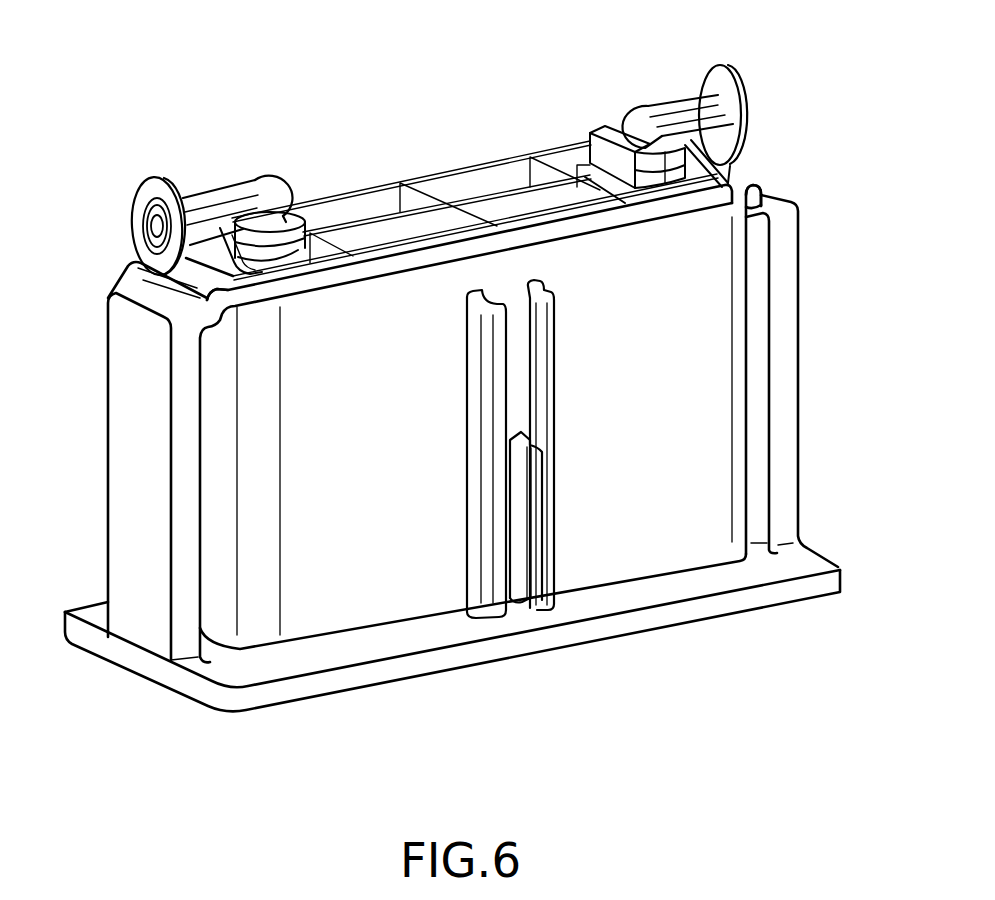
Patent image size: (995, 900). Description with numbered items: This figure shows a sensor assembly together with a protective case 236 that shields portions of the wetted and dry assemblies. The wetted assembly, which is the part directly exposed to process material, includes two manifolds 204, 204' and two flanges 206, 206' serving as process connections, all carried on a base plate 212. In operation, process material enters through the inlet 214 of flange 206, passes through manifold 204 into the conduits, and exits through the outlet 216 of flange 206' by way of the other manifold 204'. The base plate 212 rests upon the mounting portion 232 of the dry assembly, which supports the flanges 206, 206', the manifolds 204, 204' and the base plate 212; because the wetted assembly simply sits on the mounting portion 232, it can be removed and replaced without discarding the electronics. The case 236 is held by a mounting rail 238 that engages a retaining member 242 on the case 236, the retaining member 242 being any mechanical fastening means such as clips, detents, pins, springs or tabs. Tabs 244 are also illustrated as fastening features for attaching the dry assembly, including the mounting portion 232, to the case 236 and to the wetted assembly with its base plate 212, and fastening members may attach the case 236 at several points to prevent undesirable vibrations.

The manifold 204 is at (262, 206).
The manifold 204' is at (650, 141).
The flange 206 is at (211, 201).
The flange 206' is at (687, 88).
The base plate 212 is at (481, 180).
The inlet 214 is at (156, 225).
The outlet 216 is at (774, 102).
The mounting portion 232 is at (122, 493).
The case 236 is at (673, 537).
The mounting rail 238 is at (538, 606).
The retaining member 242 is at (557, 555).
The tabs 244 is at (133, 280).